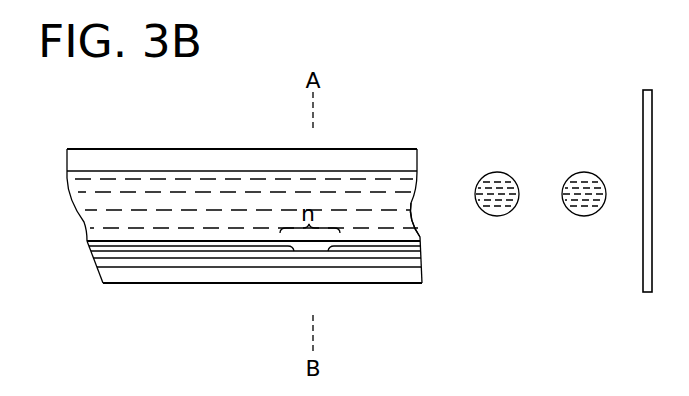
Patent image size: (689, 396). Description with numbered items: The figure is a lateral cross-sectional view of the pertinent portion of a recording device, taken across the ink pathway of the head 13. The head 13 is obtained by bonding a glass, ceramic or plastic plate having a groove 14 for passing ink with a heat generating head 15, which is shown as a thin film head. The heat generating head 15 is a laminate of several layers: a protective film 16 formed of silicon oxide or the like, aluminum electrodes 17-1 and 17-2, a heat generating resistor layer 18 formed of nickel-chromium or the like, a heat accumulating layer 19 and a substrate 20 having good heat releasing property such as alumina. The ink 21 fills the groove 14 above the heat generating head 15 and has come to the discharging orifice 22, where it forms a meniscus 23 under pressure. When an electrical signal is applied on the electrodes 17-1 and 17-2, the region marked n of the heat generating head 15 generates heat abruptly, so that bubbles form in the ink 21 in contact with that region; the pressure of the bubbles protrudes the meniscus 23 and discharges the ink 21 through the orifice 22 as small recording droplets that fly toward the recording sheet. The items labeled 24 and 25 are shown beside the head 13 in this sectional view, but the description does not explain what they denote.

The top plate / cover layer 13 is at (203, 149).
The upper layer boundary 14 is at (251, 170).
The laminated layer assembly 15 is at (227, 288).
The first layer 16 is at (148, 244).
The first electrode layer 17-1 is at (198, 249).
The second electrode layer 17-2 is at (393, 250).
The intermediate layer 18 is at (250, 258).
The insulating layer 19 is at (287, 261).
The bottom layer 20 is at (343, 270).
The core body 21 is at (123, 180).
The side edge portion 22 is at (418, 208).
The recessed side surface 23 is at (410, 204).
The rods 24 is at (605, 168).
The plate 25 is at (643, 122).